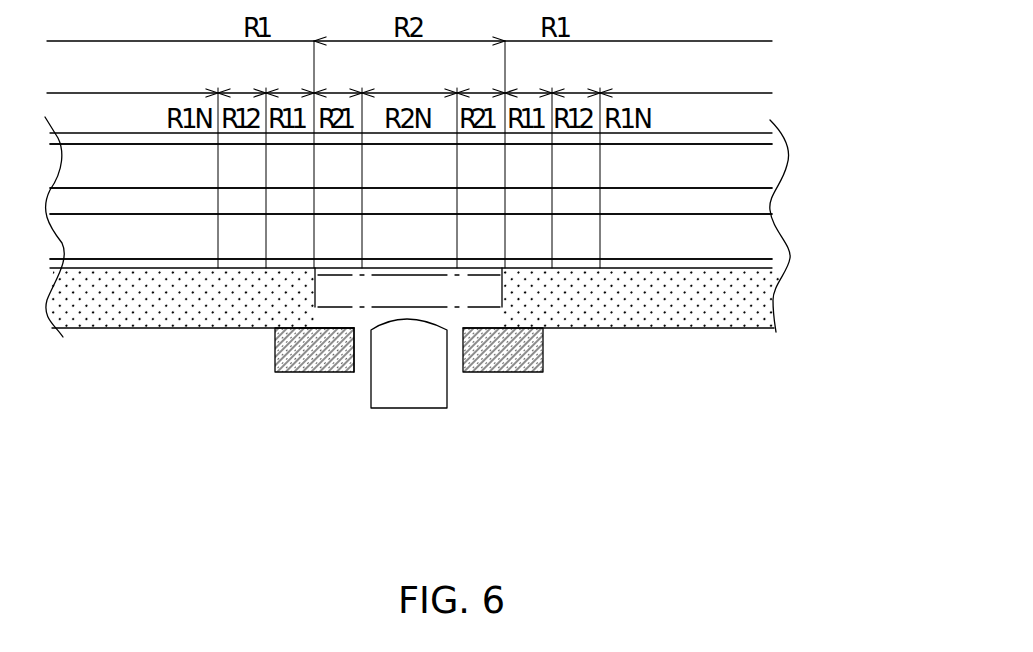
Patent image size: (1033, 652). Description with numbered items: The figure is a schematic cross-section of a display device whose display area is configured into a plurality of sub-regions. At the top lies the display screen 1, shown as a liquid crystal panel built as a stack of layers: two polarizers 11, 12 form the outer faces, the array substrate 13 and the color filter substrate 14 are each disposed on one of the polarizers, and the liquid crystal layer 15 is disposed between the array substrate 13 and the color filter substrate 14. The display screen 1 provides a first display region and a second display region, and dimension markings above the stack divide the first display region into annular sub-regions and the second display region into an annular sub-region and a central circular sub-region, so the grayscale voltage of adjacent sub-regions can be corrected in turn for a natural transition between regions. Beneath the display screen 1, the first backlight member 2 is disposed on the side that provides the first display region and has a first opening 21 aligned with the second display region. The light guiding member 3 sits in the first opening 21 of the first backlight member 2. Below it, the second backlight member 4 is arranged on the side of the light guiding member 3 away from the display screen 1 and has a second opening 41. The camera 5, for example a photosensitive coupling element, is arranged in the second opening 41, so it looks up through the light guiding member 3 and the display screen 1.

The display screen 1 is at (907, 112).
The polarizer 11 is at (768, 265).
The polarizer 12 is at (768, 137).
The array substrate 13 is at (767, 243).
The color filter substrate 14 is at (767, 165).
The liquid crystal layer 15 is at (770, 205).
The first backlight member 2 is at (85, 317).
The first opening 21 is at (326, 322).
The light guiding member 3 is at (455, 303).
The second backlight member 4 is at (287, 373).
The second opening 41 is at (354, 365).
The camera 5 is at (412, 385).